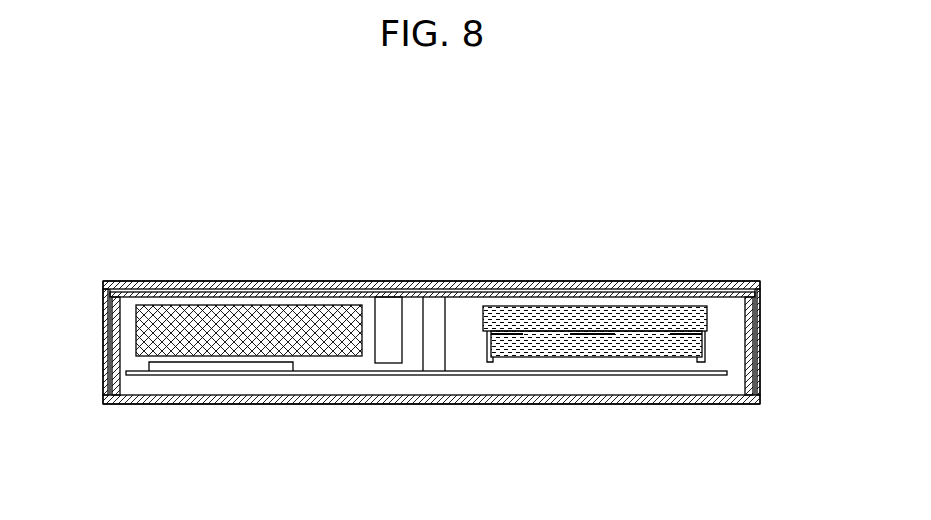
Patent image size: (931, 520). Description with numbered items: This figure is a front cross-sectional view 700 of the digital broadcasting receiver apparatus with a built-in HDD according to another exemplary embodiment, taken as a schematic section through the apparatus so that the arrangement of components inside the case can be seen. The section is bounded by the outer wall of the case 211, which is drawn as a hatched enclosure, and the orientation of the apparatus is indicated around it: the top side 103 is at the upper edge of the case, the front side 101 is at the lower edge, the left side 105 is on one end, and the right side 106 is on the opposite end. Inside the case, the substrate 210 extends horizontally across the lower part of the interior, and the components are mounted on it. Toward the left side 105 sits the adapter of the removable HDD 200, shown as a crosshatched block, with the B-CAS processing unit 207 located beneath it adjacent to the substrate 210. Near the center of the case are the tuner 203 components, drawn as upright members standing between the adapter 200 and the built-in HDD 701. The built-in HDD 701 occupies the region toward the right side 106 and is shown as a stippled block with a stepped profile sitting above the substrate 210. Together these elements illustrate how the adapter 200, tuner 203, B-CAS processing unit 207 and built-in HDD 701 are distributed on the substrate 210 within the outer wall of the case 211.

The front cross-sectional view of device 700 is at (268, 108).
The front side 101 is at (431, 433).
The top side 103 is at (433, 187).
The left side 105 is at (93, 338).
The right side 106 is at (772, 342).
The adapter of the removable HDD 200 is at (196, 310).
The tuner 203 is at (388, 305).
The B-CAS processing unit 207 is at (224, 366).
The substrate 210 is at (582, 376).
The outer wall of the case 211 is at (713, 403).
The built-in HDD 701 is at (597, 310).